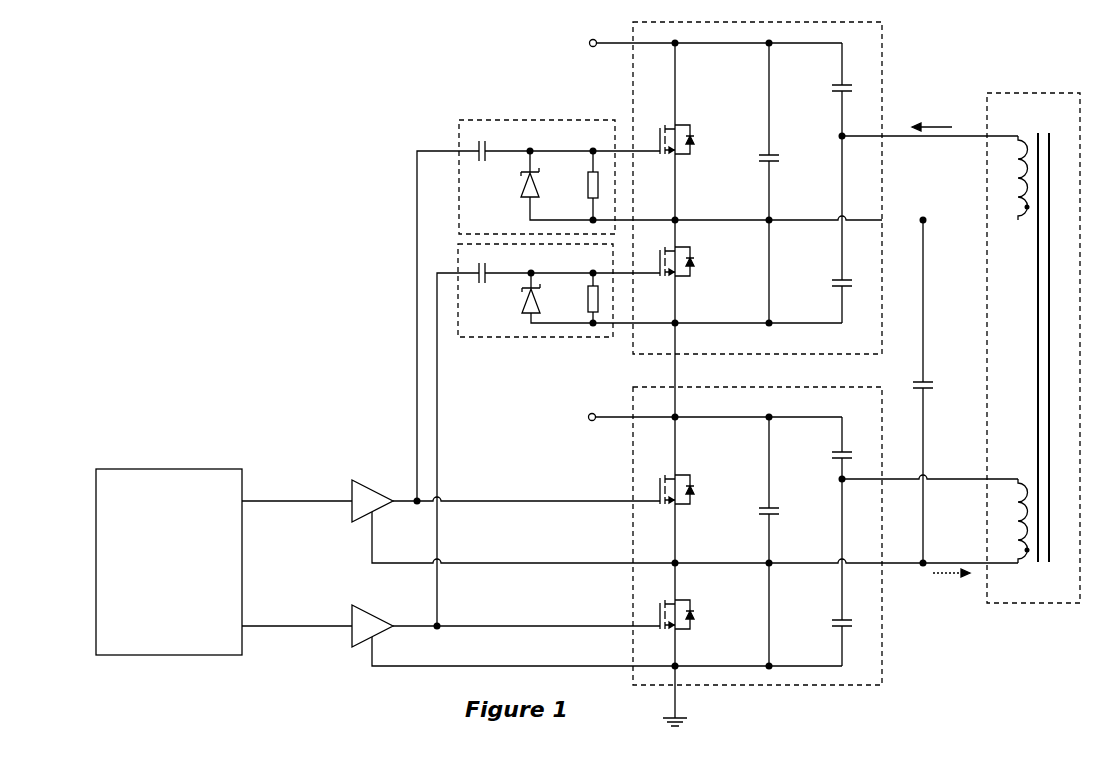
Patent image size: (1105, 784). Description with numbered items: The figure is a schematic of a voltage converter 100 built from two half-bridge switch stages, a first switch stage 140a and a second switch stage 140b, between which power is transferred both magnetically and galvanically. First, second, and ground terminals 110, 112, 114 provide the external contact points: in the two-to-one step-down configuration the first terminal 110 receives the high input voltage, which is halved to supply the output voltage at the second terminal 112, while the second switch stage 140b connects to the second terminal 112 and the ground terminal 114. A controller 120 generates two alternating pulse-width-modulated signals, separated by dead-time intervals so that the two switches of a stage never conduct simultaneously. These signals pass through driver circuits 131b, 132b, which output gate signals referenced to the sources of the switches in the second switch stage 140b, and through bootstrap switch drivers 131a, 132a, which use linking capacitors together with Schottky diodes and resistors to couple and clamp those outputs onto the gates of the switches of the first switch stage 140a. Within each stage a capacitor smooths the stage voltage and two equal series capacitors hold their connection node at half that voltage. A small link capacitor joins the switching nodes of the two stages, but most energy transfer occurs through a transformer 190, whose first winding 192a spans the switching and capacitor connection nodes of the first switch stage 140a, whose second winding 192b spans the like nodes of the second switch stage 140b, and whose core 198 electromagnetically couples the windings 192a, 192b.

The voltage converter 100 is at (146, 121).
The first terminal 110 is at (607, 33).
The second terminal 112 is at (607, 407).
The ground terminal 114 is at (691, 715).
The controller 120 is at (169, 551).
The bootstrap switch driver 131a is at (567, 169).
The driver circuit 131b is at (372, 492).
The bootstrap switch driver 132a is at (566, 302).
The driver circuit 132b is at (372, 617).
The first switch stage 140a is at (758, 178).
The second switch stage 140b is at (758, 543).
The transformer 190 is at (1033, 339).
The first winding 192a is at (1013, 188).
The second winding 192b is at (1013, 532).
The core 198 is at (1047, 337).